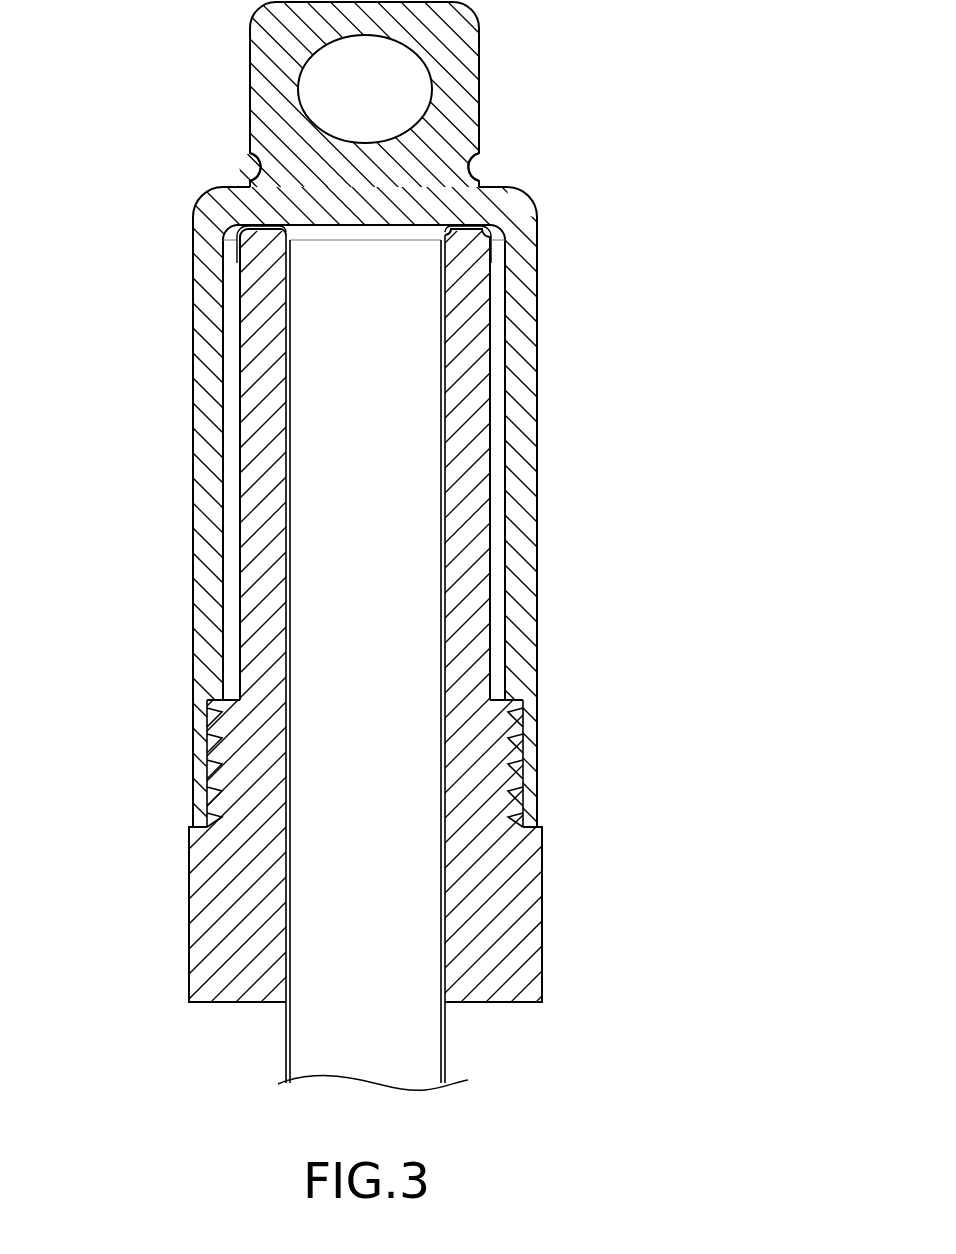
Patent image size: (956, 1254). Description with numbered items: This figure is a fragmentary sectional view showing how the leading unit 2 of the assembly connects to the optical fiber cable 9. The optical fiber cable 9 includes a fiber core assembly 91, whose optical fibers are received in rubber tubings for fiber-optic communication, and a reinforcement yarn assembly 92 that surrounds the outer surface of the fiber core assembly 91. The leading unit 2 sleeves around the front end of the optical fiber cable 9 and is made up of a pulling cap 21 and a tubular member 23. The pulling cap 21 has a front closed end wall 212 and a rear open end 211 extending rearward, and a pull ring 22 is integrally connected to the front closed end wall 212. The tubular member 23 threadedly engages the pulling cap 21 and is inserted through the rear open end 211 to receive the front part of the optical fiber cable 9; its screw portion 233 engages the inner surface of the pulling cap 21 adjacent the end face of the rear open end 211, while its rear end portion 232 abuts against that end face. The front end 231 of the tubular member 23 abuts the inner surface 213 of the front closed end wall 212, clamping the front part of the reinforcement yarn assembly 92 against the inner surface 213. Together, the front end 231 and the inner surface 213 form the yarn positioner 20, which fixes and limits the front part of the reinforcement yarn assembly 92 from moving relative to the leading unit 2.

The leading unit 2 is at (478, 545).
The yarn positioner 20 is at (450, 240).
The pulling cap 21 is at (537, 500).
The rear open end 211 is at (524, 829).
The front closed end wall 212 is at (266, 176).
The inner surface 213 is at (415, 226).
The pull ring 22 is at (479, 81).
The tubular member 23 is at (542, 925).
The front end 231 is at (464, 226).
The rear end portion 232 is at (197, 826).
The screw portion 233 is at (207, 768).
The optical fiber cable 9 is at (376, 662).
The fiber core assembly 91 is at (423, 404).
The reinforcement yarn assembly 92 is at (238, 256).